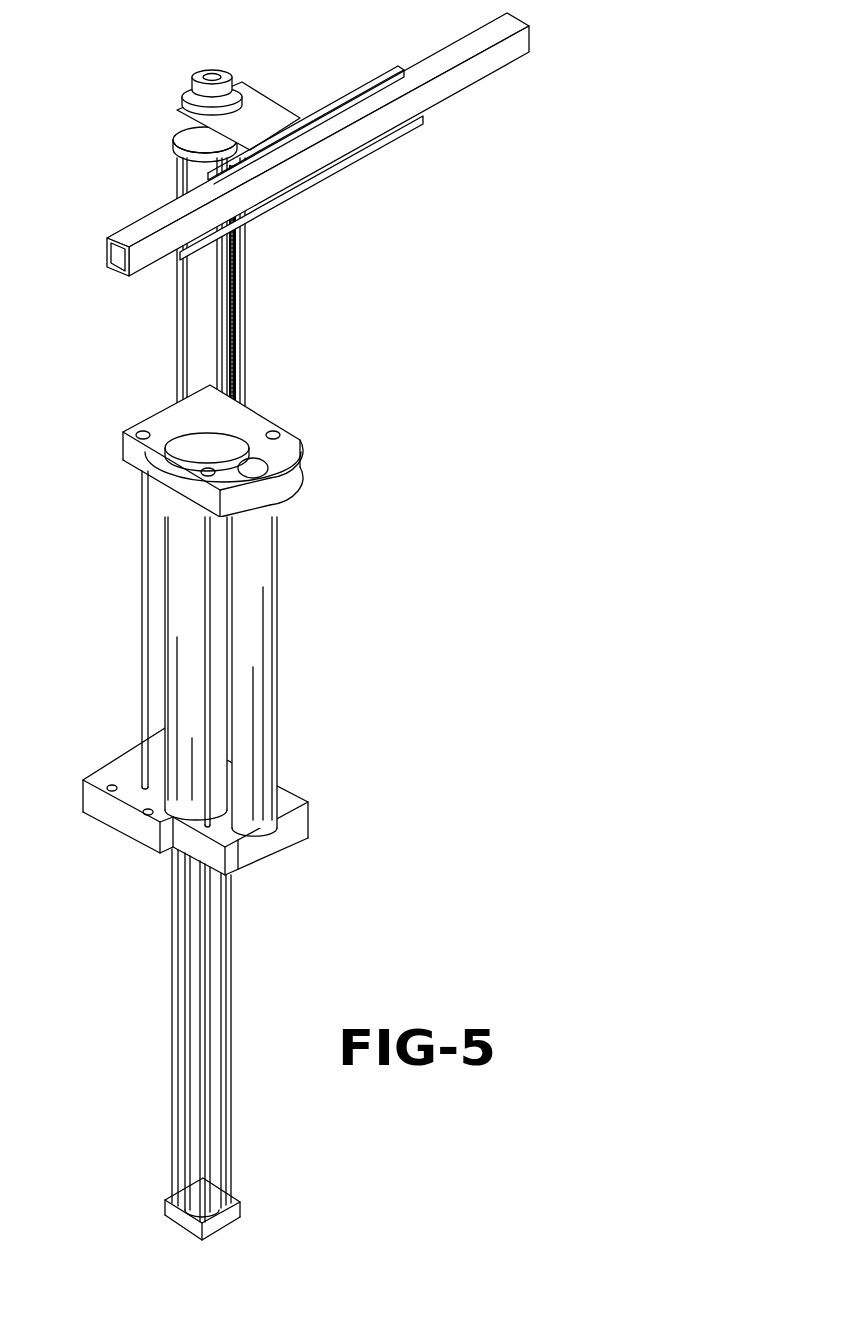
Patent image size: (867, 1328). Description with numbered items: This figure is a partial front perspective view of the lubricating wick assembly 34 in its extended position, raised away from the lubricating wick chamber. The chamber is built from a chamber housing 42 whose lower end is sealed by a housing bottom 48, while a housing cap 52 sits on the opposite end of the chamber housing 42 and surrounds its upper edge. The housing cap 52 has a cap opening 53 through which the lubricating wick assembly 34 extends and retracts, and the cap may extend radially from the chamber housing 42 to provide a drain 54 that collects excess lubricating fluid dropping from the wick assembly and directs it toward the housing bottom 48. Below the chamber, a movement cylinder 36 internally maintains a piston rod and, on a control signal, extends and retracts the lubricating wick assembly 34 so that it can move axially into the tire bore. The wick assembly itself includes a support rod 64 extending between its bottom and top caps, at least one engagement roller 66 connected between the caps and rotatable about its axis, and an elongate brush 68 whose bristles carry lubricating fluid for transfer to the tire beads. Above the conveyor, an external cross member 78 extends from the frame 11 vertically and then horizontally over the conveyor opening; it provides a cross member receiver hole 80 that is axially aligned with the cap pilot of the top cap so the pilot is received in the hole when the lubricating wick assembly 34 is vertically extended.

The frame 11 is at (136, 218).
The lubricating wick assembly 34 is at (246, 287).
The movement cylinder 36 is at (190, 1015).
The chamber housing 42 is at (185, 615).
The housing bottom 48 is at (270, 846).
The housing cap 52 is at (190, 490).
The cap opening 53 is at (266, 452).
The drain 54 is at (266, 464).
The support rod 64 is at (183, 352).
The engagement roller 66 is at (246, 266).
The elongate brush 68 is at (240, 316).
The external cross member 78 is at (262, 118).
The cross member receiver hole 80 is at (212, 76).